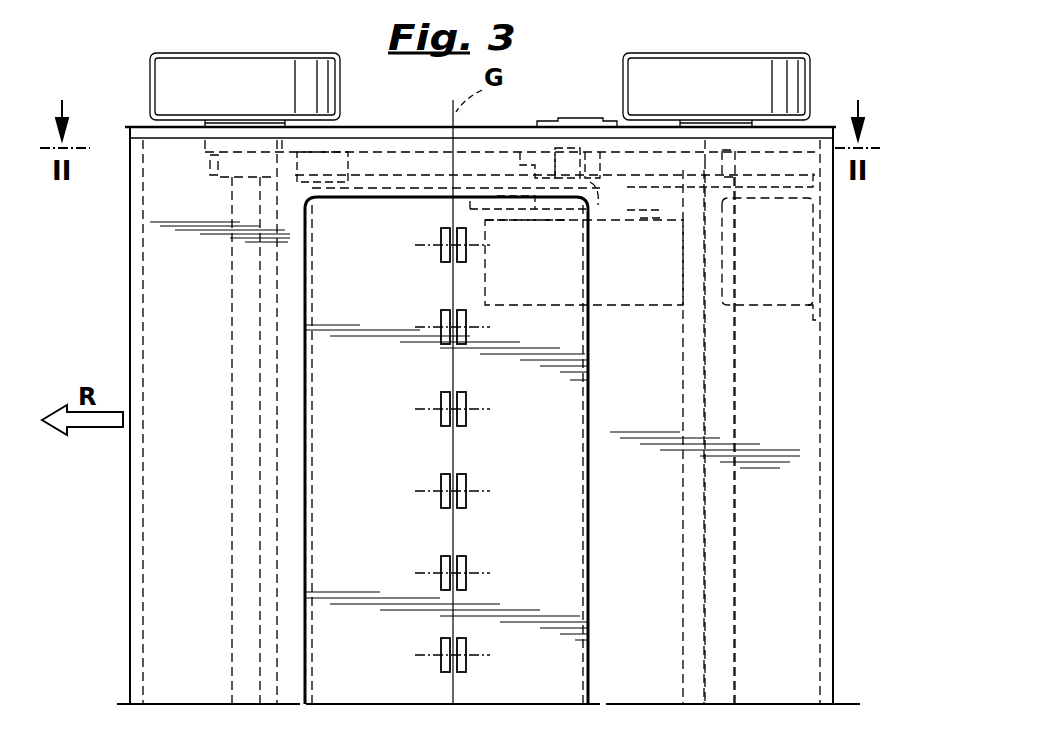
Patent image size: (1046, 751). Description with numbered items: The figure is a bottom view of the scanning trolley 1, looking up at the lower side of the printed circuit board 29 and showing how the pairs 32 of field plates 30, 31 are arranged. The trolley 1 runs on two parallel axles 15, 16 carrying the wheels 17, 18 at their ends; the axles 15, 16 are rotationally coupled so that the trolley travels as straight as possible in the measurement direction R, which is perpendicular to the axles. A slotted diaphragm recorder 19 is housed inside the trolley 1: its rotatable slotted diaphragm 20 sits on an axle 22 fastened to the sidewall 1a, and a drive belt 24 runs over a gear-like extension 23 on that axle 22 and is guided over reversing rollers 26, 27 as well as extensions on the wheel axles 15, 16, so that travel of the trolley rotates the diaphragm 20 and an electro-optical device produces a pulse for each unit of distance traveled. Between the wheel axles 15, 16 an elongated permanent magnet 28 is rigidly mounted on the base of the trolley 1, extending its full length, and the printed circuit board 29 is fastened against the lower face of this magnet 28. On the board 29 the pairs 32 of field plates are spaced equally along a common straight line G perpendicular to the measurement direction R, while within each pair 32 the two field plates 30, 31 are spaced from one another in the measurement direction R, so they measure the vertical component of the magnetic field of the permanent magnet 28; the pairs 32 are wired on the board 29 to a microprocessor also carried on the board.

The scanning trolley 1 is at (122, 216).
The sidewall 1a is at (566, 124).
The axle 15 is at (247, 575).
The axle 16 is at (718, 584).
The wheel 17 is at (168, 86).
The wheel 18 is at (785, 88).
The slotted diaphragm recorder 19 is at (640, 306).
The slotted diaphragm 20 is at (517, 220).
The axle 22 is at (607, 210).
The gear like extension 23 is at (606, 150).
The drive belt 24 is at (400, 150).
The reversing roller 26 is at (345, 168).
The reversing roller 27 is at (526, 150).
The permanent magnet 28 is at (575, 560).
The printed circuit board 29 is at (276, 362).
The field plate 30 is at (441, 661).
The field plate 31 is at (498, 673).
The pair of field plates 32 is at (438, 643).